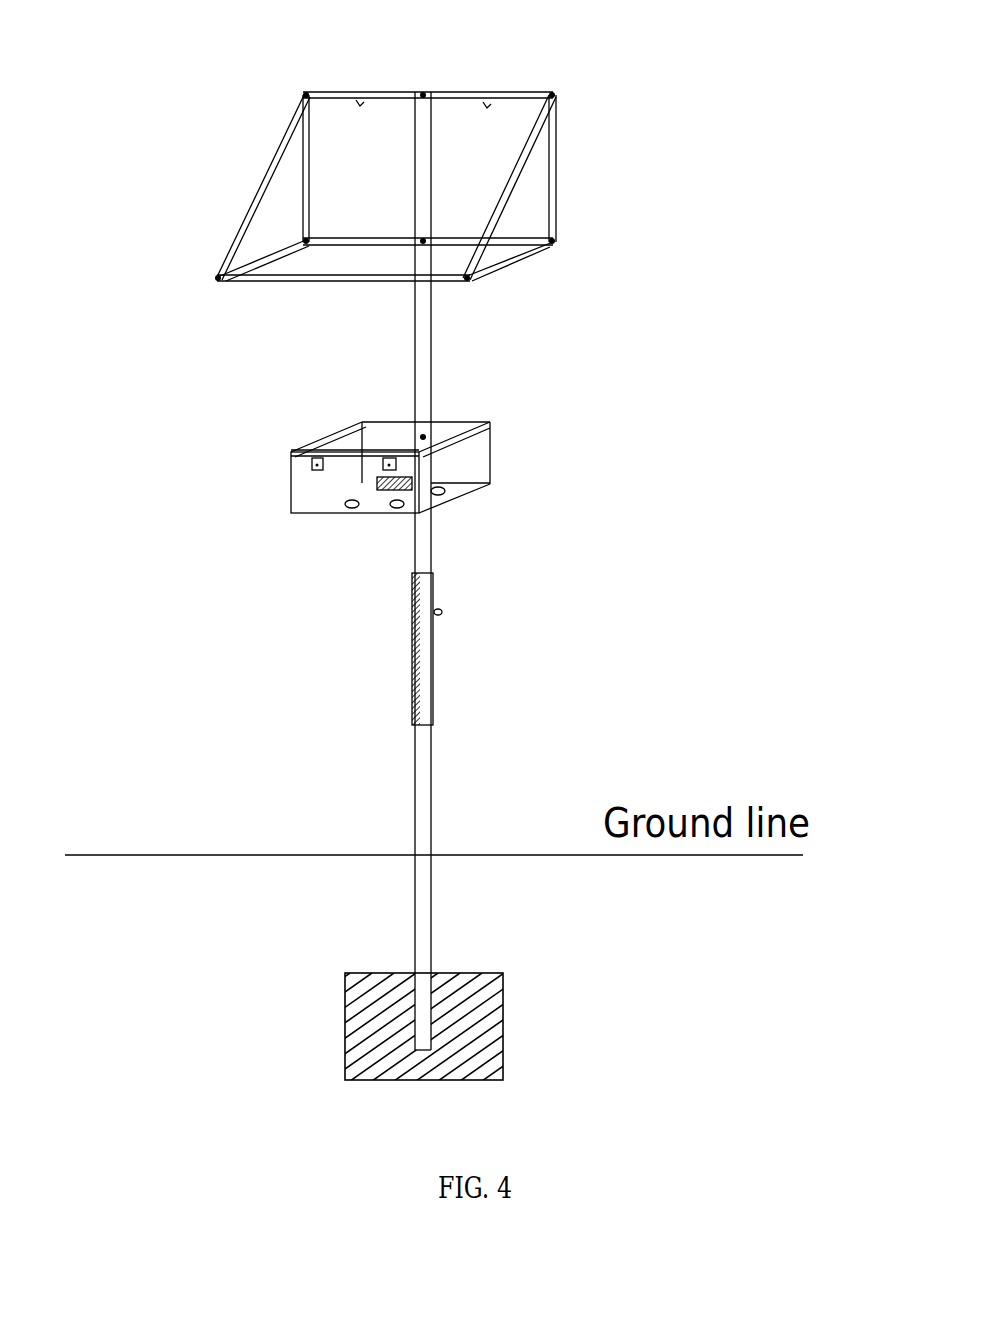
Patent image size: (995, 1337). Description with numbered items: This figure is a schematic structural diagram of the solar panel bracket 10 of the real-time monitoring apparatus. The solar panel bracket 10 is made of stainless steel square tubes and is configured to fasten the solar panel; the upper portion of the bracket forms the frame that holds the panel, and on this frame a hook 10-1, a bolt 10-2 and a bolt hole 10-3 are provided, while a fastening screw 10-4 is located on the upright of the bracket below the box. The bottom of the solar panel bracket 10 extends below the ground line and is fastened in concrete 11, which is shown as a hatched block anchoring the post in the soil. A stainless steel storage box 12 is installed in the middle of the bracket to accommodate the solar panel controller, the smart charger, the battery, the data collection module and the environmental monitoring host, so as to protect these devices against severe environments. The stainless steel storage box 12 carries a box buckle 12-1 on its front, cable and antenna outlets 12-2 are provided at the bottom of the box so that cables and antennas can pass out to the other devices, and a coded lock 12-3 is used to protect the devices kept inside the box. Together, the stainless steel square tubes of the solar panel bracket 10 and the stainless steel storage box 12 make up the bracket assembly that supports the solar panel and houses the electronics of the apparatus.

The solar panel bracket 10 is at (479, 571).
The hook 10-1 is at (499, 138).
The bolt 10-2 is at (351, 138).
The bolt hole 10-3 is at (385, 213).
The fastening screw 10-4 is at (501, 636).
The concrete 11 is at (416, 1016).
The stainless steel storage box 12 is at (363, 479).
The box buckle 12-1 is at (286, 482).
The cable and antenna outlet 12-2 is at (290, 543).
The coded lock 12-3 is at (475, 506).